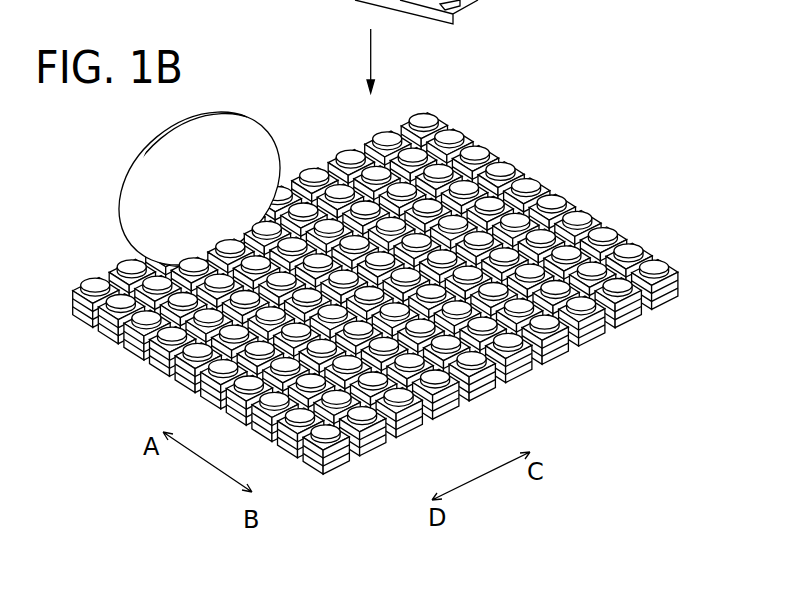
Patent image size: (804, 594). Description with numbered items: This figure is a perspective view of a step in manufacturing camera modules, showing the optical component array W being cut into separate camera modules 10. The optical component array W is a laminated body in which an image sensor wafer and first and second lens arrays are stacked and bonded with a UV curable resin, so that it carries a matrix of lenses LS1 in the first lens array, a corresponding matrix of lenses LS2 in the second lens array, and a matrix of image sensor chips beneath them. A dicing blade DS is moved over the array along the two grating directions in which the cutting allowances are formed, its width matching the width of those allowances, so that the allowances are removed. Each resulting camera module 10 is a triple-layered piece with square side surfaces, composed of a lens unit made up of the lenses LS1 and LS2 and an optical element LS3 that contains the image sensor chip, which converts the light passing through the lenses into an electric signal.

The optical component array W is at (396, 307).
The dicing blade DS is at (238, 133).
The camera module 10 is at (590, 345).
The lens LS1 is at (645, 253).
The lens LS2 is at (567, 362).
The optical element LS3 is at (407, 432).